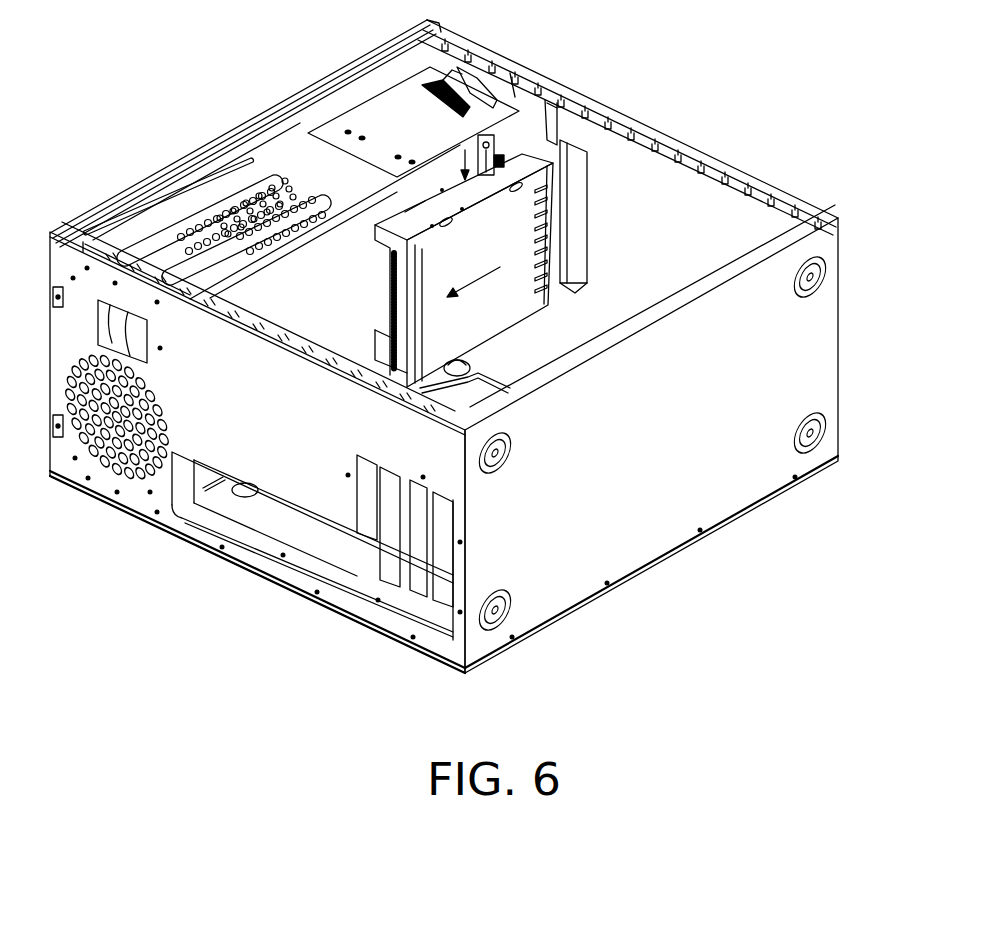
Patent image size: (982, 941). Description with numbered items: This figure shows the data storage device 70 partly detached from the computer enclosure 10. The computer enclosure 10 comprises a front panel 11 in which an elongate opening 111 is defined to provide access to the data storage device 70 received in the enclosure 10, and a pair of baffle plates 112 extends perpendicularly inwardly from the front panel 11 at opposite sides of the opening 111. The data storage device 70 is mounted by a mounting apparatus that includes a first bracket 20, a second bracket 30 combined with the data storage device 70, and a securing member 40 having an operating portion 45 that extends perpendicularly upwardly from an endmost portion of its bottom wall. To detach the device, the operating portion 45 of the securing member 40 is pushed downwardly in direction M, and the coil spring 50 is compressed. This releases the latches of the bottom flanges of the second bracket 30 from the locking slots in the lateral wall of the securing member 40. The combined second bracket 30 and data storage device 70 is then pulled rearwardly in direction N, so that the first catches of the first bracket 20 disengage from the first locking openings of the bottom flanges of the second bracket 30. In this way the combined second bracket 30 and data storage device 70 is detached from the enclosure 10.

The computer enclosure 10 is at (741, 158).
The front panel 11 is at (747, 227).
The elongate opening 111 is at (647, 130).
The baffle plates 112 is at (572, 192).
The first bracket 20 is at (283, 157).
The second bracket 30 is at (512, 347).
The securing member 40 is at (465, 63).
The operating portion 45 is at (466, 136).
The coil spring 50 is at (569, 143).
The data storage device 70 is at (372, 280).